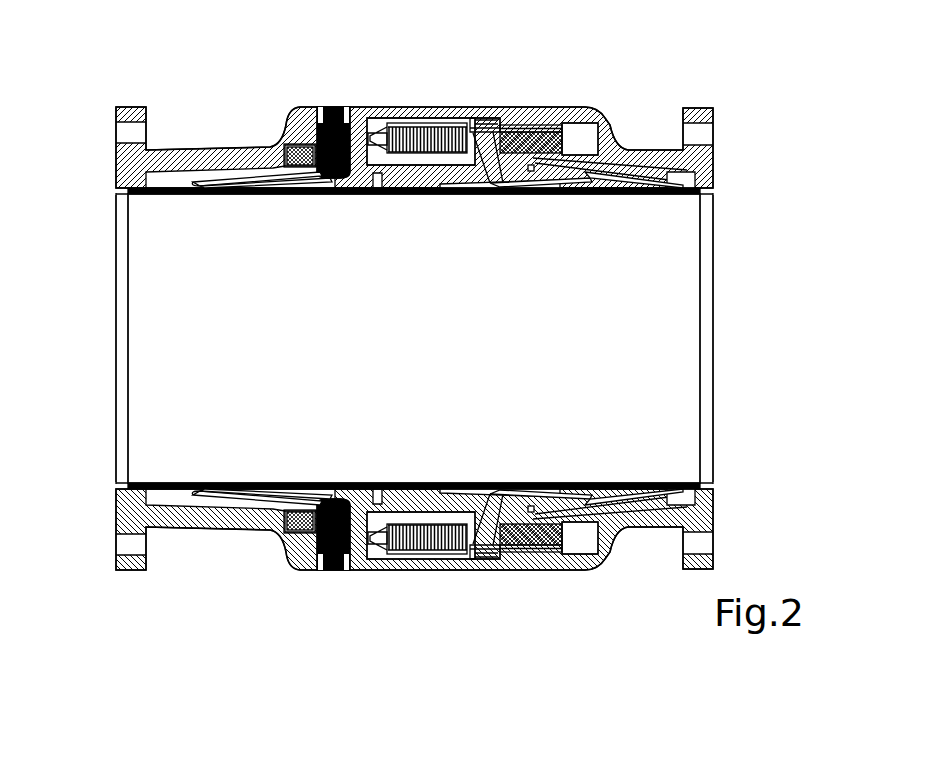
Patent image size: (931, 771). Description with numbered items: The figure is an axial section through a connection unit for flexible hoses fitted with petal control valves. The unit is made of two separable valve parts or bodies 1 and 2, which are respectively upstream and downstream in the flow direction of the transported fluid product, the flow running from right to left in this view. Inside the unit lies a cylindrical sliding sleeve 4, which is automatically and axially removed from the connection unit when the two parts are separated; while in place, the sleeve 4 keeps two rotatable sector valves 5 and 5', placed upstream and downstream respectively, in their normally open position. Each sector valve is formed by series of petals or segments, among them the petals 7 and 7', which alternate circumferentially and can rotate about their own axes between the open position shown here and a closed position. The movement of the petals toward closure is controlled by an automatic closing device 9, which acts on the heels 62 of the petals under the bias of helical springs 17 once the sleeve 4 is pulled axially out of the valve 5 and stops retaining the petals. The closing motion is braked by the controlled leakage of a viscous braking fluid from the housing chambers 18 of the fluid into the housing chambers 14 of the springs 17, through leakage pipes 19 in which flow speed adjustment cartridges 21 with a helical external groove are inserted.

The valve part 1 is at (576, 99).
The valve part 2 is at (201, 126).
The cylindrical sliding sleeve 4 is at (412, 487).
The rotatable sector valve 5 is at (560, 338).
The rotatable sector valve 5' is at (252, 338).
The petal 7 is at (634, 338).
The petal 7' is at (266, 338).
The automatic closing device 9 is at (405, 122).
The housing chamber 14 is at (383, 190).
The helical spring 17 is at (460, 128).
The housing chamber 18 is at (587, 137).
The leakage pipe 19 is at (512, 123).
The flow speed adjustment cartridge 21 is at (532, 120).
The heel 62 is at (498, 127).